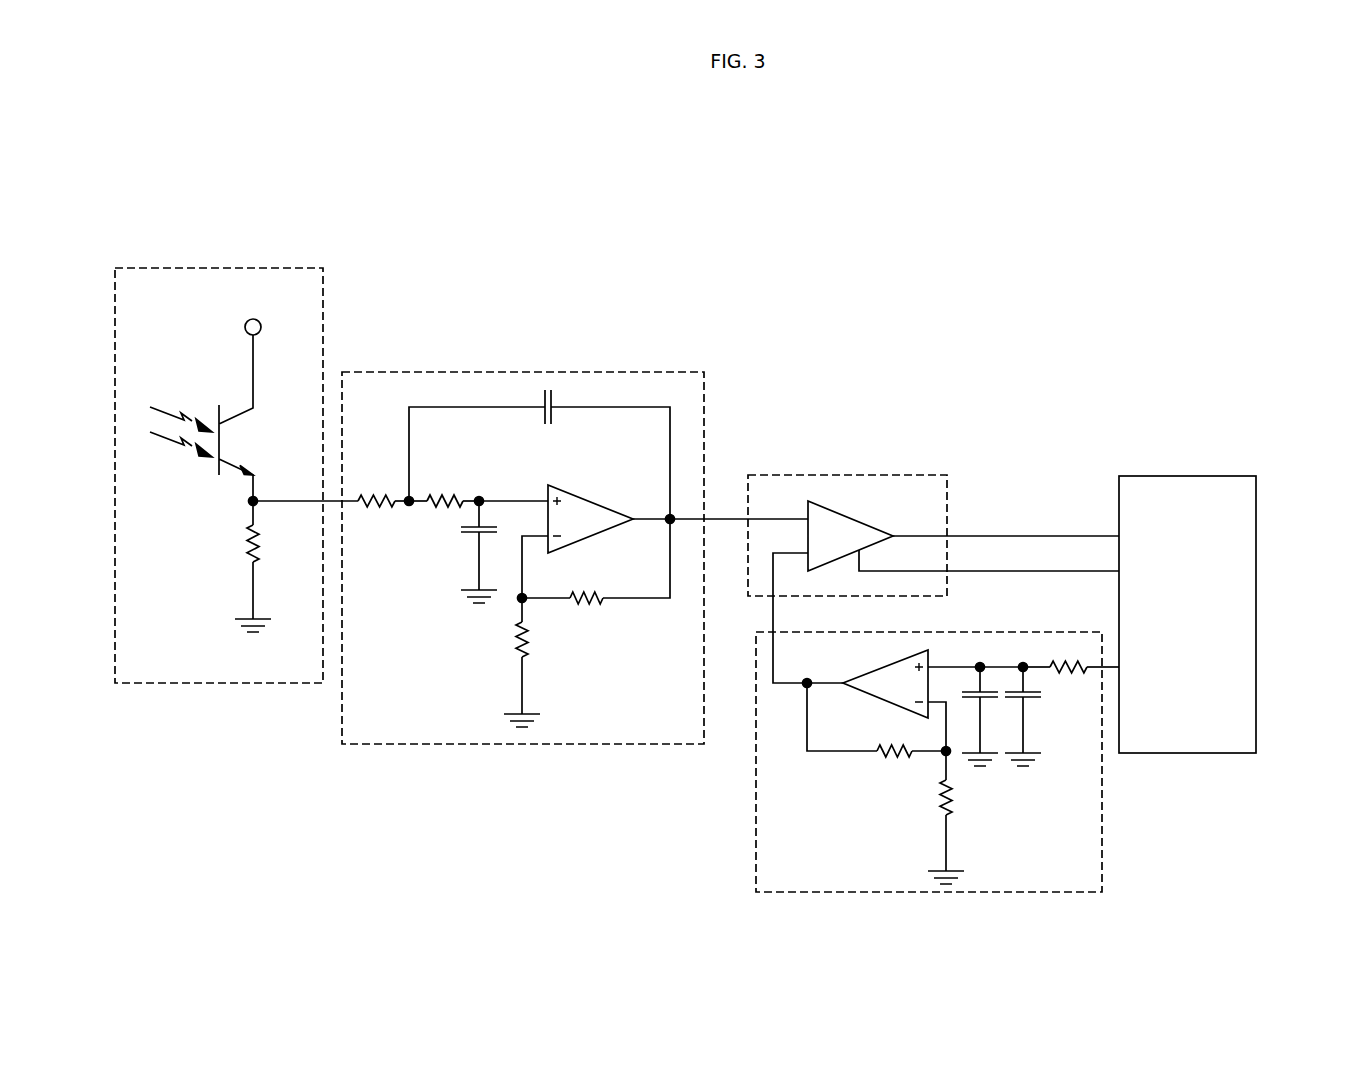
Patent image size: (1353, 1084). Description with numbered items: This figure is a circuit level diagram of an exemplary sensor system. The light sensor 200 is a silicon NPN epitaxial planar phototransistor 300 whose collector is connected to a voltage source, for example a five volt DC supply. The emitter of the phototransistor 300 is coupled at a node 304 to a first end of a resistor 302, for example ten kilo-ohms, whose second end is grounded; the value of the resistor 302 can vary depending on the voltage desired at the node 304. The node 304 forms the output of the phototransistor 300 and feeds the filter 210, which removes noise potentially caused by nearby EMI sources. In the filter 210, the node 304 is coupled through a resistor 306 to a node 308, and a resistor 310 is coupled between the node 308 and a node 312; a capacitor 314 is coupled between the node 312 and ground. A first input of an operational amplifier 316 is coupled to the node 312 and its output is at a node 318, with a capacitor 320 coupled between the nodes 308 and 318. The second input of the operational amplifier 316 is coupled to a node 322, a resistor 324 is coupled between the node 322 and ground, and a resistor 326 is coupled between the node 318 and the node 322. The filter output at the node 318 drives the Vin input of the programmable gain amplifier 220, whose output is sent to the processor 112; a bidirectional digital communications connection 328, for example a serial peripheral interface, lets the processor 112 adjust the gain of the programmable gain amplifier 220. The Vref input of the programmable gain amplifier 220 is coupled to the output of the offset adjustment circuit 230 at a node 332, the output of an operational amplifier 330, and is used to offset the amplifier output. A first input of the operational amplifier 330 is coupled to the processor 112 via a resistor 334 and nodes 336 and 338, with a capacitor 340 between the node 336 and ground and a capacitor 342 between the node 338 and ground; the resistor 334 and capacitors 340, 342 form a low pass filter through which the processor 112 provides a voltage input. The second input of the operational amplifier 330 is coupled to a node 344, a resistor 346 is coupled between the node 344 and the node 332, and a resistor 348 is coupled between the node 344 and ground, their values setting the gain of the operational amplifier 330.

The processor 112 is at (1190, 476).
The light sensor 200 is at (229, 268).
The filter 210 is at (626, 372).
The programmable gain amplifier 220 is at (857, 475).
The offset adjustment circuit 230 is at (1020, 631).
The phototransistor 300 is at (245, 406).
The resistor 302 is at (247, 548).
The node 304 is at (257, 497).
The resistor 306 is at (372, 504).
The node 308 is at (407, 496).
The resistor 310 is at (437, 494).
The node 312 is at (486, 497).
The capacitor 314 is at (470, 540).
The operational amplifier 316 is at (597, 538).
The node 318 is at (667, 512).
The capacitor 320 is at (553, 402).
The node 322 is at (521, 605).
The resistor 324 is at (532, 641).
The resistor 326 is at (598, 590).
The bidirectional digital communications connection 328 is at (1004, 570).
The operational amplifier 330 is at (873, 703).
The node 332 is at (809, 681).
The resistor 334 is at (1058, 670).
The node 336 is at (1024, 663).
The node 338 is at (980, 663).
The capacitor 340 is at (1035, 699).
The capacitor 342 is at (990, 699).
The node 344 is at (944, 760).
The resistor 346 is at (888, 758).
The resistor 348 is at (943, 803).